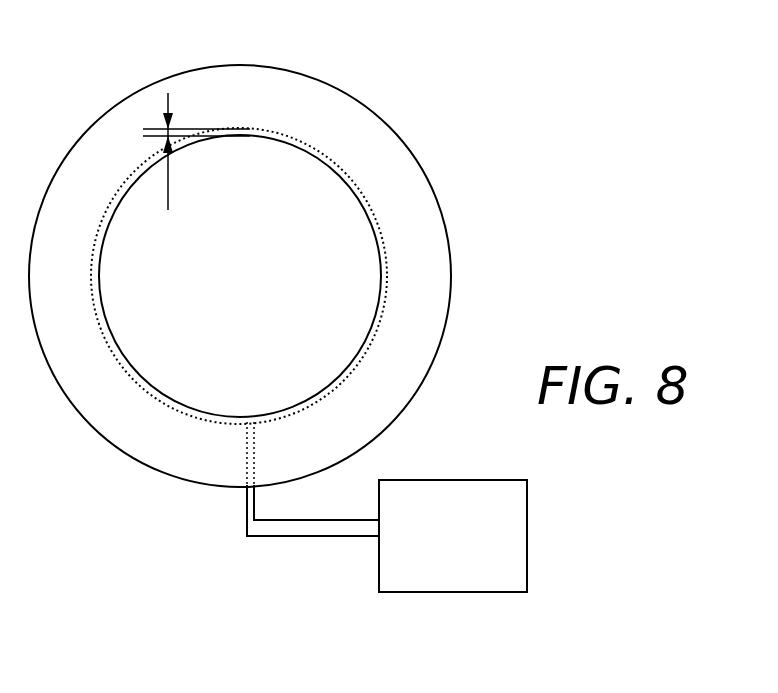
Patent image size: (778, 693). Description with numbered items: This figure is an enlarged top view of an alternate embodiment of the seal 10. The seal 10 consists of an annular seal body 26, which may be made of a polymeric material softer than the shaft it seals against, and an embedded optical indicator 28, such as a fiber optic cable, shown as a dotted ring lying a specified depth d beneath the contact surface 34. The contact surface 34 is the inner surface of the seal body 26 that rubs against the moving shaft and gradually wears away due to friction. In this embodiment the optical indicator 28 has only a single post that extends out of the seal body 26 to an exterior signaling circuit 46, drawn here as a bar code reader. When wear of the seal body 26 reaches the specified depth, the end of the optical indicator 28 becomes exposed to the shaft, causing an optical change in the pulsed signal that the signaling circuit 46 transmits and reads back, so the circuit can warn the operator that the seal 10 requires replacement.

The seal 10 is at (428, 112).
The seal body 26 is at (427, 228).
The contact surface 34 is at (157, 386).
The optical indicator 28 is at (247, 454).
The signaling circuit 46 is at (452, 593).